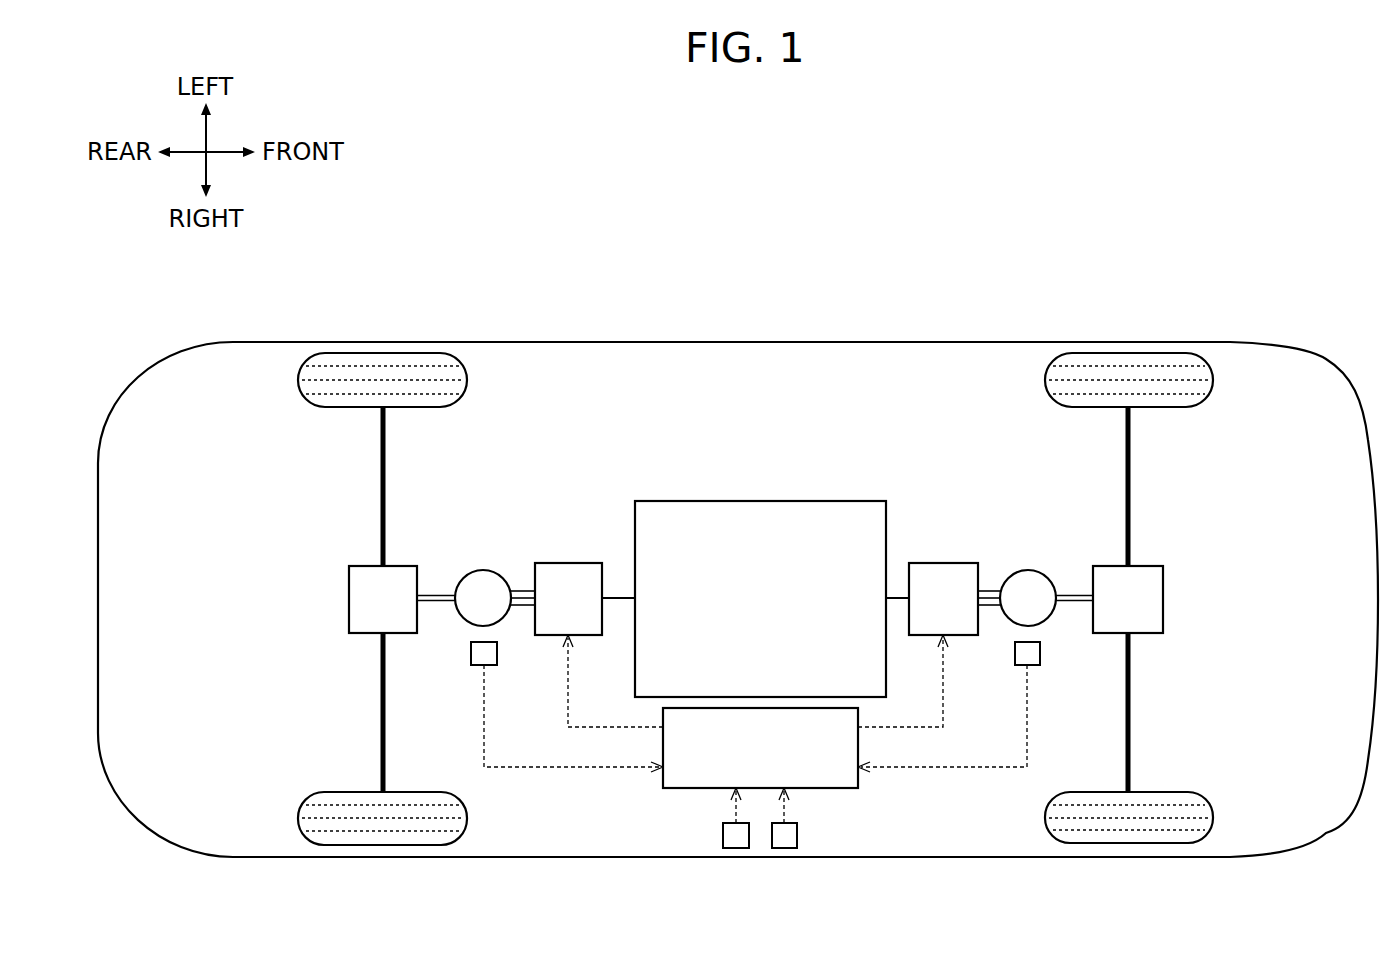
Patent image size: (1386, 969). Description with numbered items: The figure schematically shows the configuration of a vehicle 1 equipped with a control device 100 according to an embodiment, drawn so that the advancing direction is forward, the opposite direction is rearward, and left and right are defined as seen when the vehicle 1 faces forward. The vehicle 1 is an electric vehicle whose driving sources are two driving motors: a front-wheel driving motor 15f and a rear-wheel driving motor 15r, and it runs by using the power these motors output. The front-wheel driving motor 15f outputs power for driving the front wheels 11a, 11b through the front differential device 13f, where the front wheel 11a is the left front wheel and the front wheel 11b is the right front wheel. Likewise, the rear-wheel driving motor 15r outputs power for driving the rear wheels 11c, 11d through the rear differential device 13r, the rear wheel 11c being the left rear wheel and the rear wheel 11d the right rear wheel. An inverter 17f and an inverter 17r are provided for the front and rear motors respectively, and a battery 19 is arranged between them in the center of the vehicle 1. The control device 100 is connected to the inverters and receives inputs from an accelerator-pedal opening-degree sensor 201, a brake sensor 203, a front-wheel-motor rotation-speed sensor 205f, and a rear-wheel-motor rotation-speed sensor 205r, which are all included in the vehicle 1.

The vehicle 1 is at (1165, 134).
The front wheel 11a is at (1152, 355).
The front wheel 11b is at (1152, 845).
The rear wheel 11c is at (350, 355).
The rear wheel 11d is at (353, 847).
The rear differential device 13r is at (404, 572).
The front differential device 13f is at (1112, 570).
The rear-wheel driving motor 15r is at (485, 580).
The front-wheel driving motor 15f is at (1023, 577).
The inverter 17r is at (570, 575).
The inverter 17f is at (941, 575).
The battery 19 is at (730, 560).
The control device 100 is at (827, 770).
The accelerator-pedal opening-degree sensor 201 is at (736, 848).
The brake sensor 203 is at (784, 848).
The rear-wheel-motor rotation-speed sensor 205r is at (490, 665).
The front-wheel-motor rotation-speed sensor 205f is at (1022, 665).